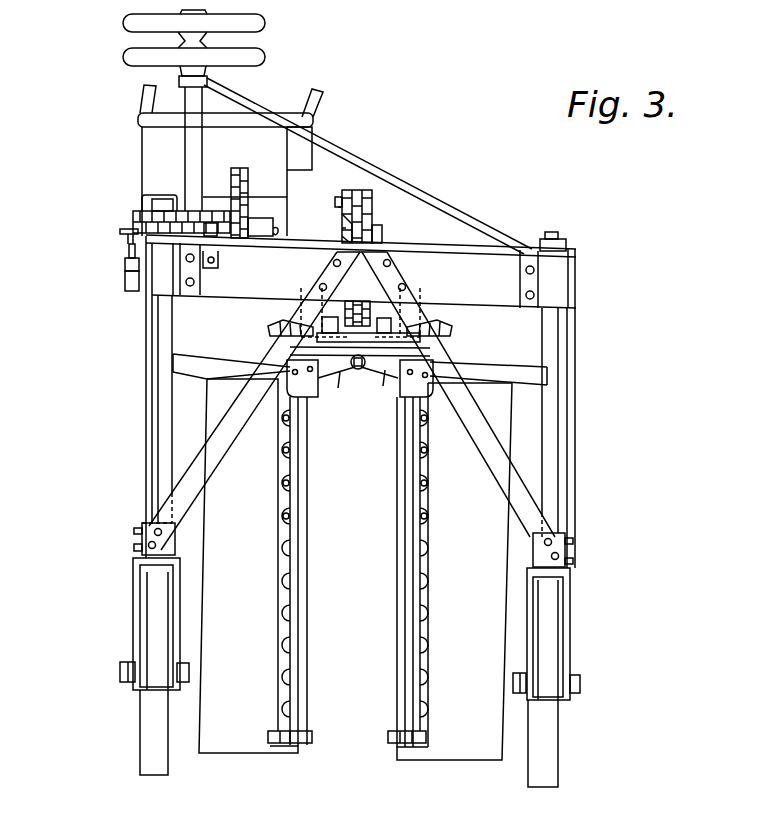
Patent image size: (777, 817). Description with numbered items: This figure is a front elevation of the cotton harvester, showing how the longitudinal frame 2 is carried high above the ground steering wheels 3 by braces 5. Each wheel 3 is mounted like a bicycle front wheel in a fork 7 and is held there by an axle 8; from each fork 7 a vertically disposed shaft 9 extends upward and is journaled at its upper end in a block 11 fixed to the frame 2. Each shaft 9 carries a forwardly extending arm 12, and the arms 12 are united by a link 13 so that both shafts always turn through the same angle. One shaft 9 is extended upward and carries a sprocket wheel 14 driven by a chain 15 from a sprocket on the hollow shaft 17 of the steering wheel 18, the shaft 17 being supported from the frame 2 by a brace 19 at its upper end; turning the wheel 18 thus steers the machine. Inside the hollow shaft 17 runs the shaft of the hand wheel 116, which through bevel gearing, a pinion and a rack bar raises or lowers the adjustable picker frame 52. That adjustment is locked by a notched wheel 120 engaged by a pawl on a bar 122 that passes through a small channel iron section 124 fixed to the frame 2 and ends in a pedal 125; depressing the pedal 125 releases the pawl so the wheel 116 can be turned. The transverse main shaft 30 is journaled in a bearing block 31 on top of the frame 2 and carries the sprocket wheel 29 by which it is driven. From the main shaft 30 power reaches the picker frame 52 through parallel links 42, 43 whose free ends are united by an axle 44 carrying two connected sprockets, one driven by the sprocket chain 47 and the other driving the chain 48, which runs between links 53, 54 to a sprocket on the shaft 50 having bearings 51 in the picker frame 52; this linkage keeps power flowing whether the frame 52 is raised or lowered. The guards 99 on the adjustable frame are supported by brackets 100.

The hand wheel 116 is at (263, 26).
The steering wheel 18 is at (125, 58).
The hollow shaft 17 is at (188, 143).
The bearing block 31 is at (236, 168).
The sprocket wheel 14 is at (137, 210).
The chain 15 is at (210, 210).
The sprocket wheel 29 is at (249, 198).
The main shaft 30 is at (269, 225).
The brace 19 is at (341, 148).
The parallel link 43 is at (410, 190).
The sprocket chain 47 is at (348, 190).
The chain 48 is at (358, 190).
The axle 44 is at (338, 197).
The parallel link 42 is at (341, 206).
The parallel link 53 is at (342, 229).
The parallel link 54 is at (374, 224).
The link 13 is at (426, 247).
The longitudinal frame 2 is at (284, 291).
The block 11 is at (147, 296).
The arm 12 is at (571, 256).
The pedal 125 is at (120, 232).
The bar 122 is at (127, 246).
The channel iron section 124 is at (123, 262).
The notched wheel 120 is at (123, 276).
The vertically disposed shaft 9 is at (160, 367).
The brace 5 is at (220, 442).
The shaft 50 is at (393, 266).
The bearing 51 is at (362, 301).
The picker frame 52 is at (543, 362).
The bracket 100 is at (358, 386).
The guard 99 is at (355, 560).
The fork 7 is at (133, 606).
The steering wheel 3 is at (150, 722).
The axle 8 is at (120, 671).